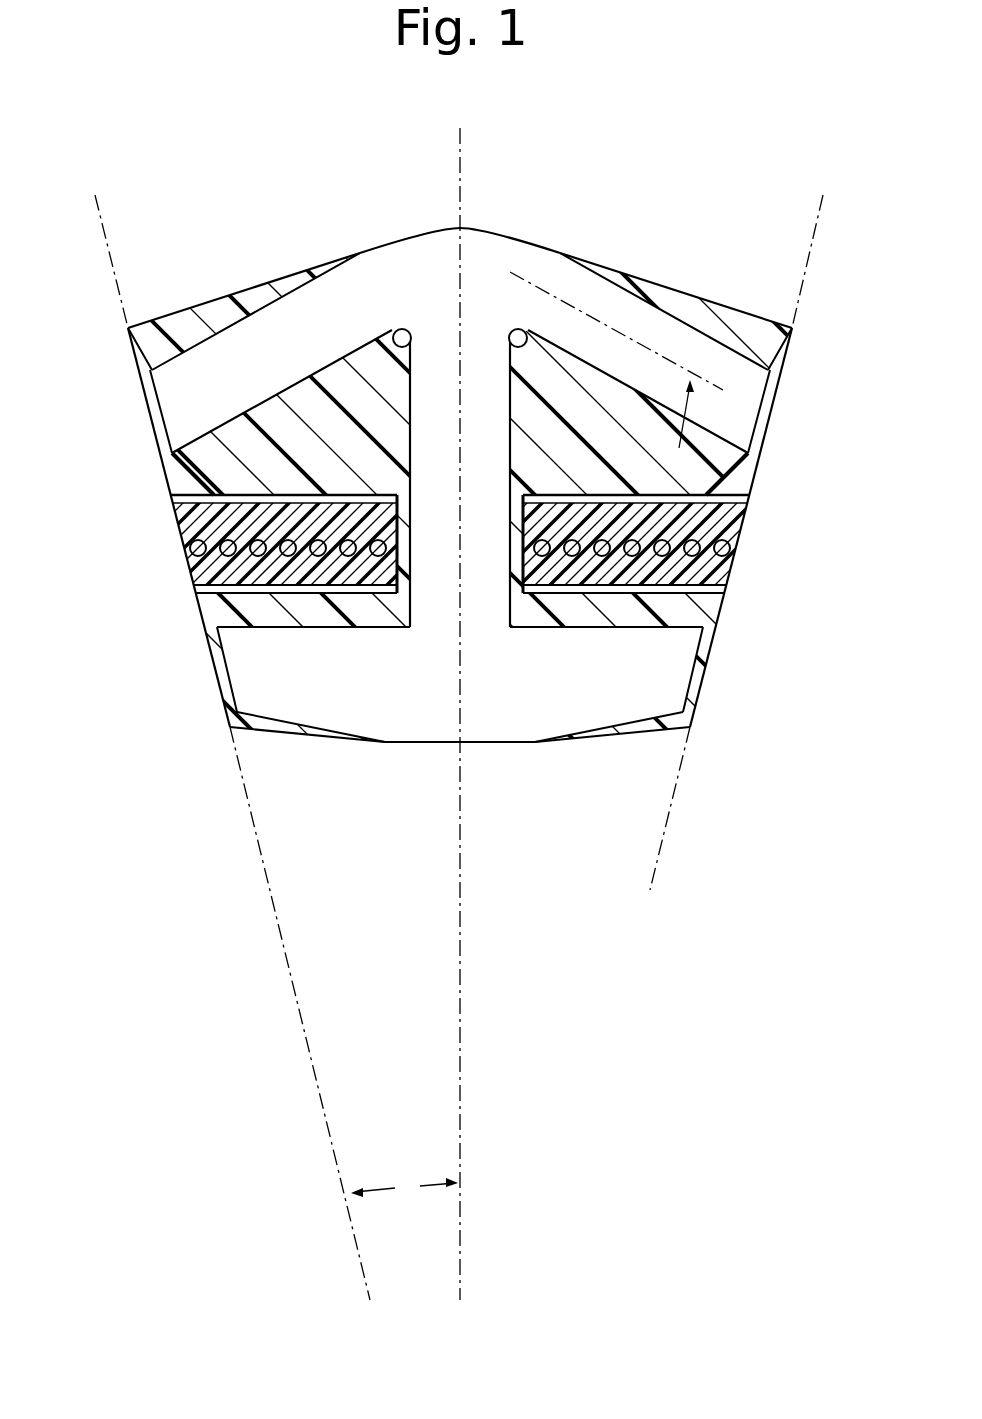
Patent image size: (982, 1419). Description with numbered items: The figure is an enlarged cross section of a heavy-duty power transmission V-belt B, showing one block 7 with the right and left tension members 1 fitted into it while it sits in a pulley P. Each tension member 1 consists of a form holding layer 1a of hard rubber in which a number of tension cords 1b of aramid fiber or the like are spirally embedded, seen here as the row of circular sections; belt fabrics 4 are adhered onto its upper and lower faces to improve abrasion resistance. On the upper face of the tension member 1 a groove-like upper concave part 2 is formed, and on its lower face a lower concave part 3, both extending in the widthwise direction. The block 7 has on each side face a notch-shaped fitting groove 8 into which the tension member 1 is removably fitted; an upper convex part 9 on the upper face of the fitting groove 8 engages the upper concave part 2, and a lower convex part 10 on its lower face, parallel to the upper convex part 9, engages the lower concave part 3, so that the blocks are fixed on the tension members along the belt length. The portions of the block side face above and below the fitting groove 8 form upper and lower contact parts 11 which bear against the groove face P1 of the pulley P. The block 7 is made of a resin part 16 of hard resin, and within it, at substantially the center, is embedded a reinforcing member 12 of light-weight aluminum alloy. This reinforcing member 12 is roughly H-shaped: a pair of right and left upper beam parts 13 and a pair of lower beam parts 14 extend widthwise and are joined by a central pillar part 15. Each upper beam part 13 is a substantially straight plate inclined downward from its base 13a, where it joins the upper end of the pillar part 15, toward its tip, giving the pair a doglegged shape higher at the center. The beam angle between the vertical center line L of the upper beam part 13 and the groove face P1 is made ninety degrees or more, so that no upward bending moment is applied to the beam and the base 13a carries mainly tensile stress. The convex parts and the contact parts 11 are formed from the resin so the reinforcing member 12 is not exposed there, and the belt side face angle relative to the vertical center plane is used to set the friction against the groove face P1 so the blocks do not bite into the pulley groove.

The tension member 1 is at (181, 571).
The form holding layer 1a is at (187, 531).
The tension cords 1b is at (258, 597).
The upper concave part 2 is at (372, 496).
The lower concave part 3 is at (287, 592).
The belt fabric 4 is at (394, 508).
The block 7 is at (695, 286).
The fitting groove 8 is at (400, 568).
The upper convex part 9 is at (282, 497).
The lower convex part 10 is at (288, 632).
The contact part 11 is at (156, 433).
The reinforcing member 12 is at (471, 218).
The upper beam part 13 is at (648, 320).
The base of upper beam part 13a is at (407, 345).
The lower beam part 14 is at (438, 723).
The pillar part 15 is at (373, 403).
The resin part 16 is at (216, 310).
The heavy-duty power transmission V-belt B is at (272, 270).
The vertical center line of upper beam part L is at (533, 270).
The pulley P is at (803, 273).
The groove face of pulley P1 is at (137, 245).
The center axis V is at (463, 1020).